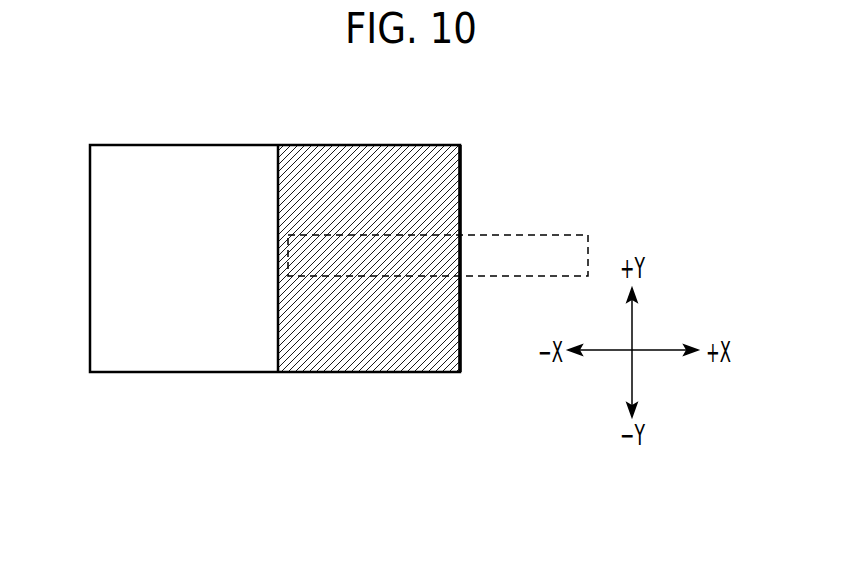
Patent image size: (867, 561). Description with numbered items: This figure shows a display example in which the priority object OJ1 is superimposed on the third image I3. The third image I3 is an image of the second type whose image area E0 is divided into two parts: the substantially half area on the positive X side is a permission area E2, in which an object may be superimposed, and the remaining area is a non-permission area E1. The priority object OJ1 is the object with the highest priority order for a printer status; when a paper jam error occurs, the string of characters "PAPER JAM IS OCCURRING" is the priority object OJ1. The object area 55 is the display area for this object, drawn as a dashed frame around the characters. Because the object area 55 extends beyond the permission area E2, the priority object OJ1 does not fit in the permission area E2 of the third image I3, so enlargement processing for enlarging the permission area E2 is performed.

The third image I3 is at (490, 167).
The non-permission area E1 is at (243, 372).
The permission area E2 is at (325, 372).
The image area E0 is at (338, 422).
The object area 55 is at (327, 235).
The priority object OJ1 is at (410, 225).